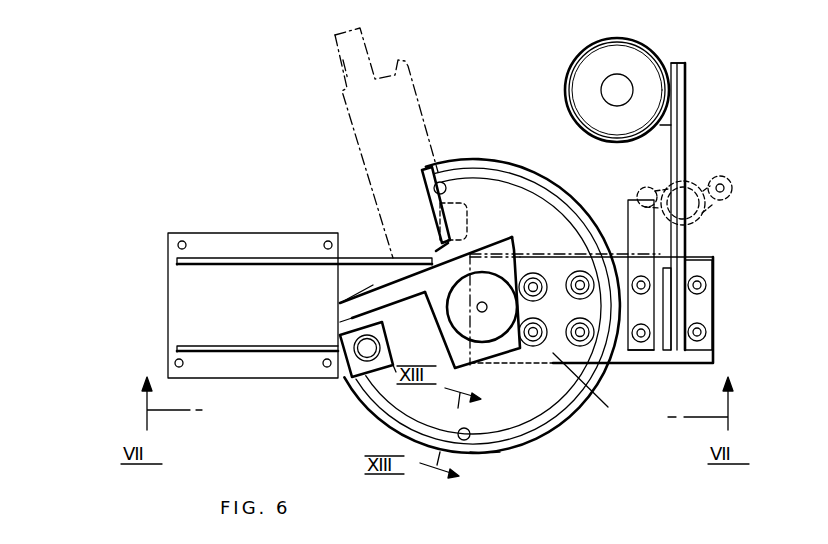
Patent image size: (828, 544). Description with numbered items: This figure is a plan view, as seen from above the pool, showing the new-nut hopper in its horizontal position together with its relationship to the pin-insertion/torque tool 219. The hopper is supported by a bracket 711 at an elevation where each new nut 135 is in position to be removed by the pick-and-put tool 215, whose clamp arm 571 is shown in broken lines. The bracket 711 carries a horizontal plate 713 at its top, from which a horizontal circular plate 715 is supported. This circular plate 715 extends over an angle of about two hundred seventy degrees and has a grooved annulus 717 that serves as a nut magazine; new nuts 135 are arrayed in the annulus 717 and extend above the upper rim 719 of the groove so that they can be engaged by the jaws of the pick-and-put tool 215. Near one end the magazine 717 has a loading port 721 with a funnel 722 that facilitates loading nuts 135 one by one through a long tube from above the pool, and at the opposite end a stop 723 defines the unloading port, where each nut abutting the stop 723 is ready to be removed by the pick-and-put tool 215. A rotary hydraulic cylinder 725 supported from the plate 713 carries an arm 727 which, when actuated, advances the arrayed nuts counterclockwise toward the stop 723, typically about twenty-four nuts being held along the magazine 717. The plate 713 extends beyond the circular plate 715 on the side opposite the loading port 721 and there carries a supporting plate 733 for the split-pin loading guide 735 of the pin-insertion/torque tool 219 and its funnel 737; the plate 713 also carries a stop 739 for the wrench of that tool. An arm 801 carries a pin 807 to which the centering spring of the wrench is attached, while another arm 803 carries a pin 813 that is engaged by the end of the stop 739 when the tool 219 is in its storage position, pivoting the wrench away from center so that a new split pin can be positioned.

The nut 135 is at (446, 185).
The pick-and-put tool 215 is at (354, 119).
The pin-insertion/torque tool 219 is at (740, 102).
The arm of the clamp 571 is at (412, 85).
The bracket 711 is at (235, 232).
The horizontal plate 713 is at (598, 386).
The horizontal circular plate 715 is at (527, 452).
The grooved annulus 717 is at (412, 413).
The upper rim 719 is at (537, 180).
The loading port 721 is at (396, 369).
The funnel 722 is at (357, 378).
The stop 723 is at (421, 168).
The rotary hydraulic cylinder 725 is at (497, 293).
The arm 727 is at (377, 300).
The supporting plate 733 is at (687, 241).
The split-pin loading guide 735 is at (722, 49).
The funnel 737 is at (565, 88).
The stop 739 is at (647, 350).
The arm 801 is at (721, 177).
The arm 803 is at (657, 169).
The pin 807 is at (719, 201).
The pin 813 is at (637, 199).